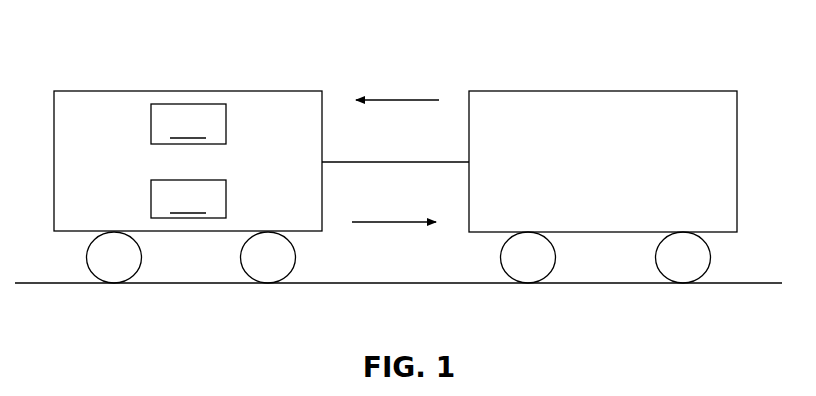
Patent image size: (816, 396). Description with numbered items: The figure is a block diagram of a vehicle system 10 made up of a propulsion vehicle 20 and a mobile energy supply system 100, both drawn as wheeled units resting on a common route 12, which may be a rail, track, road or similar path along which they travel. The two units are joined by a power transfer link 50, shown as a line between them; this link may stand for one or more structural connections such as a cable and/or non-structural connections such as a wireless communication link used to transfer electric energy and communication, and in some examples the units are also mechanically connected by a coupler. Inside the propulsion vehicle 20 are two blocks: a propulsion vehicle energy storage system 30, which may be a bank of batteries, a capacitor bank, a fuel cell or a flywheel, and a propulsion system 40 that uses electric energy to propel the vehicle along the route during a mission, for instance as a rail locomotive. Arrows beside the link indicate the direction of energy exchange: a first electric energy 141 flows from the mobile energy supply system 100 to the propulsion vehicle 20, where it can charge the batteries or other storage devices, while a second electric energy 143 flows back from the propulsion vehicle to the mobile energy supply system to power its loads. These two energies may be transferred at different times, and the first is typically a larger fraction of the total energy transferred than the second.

The vehicle system 10 is at (110, 58).
The propulsion vehicle 20 is at (218, 88).
The propulsion vehicle energy storage system 30 is at (188, 124).
The propulsion system 40 is at (188, 199).
The power transfer link 50 is at (386, 161).
The mobile energy supply system 100 is at (624, 63).
The first electric energy 141 is at (394, 98).
The second electric energy 143 is at (380, 220).
The route 12 is at (398, 284).